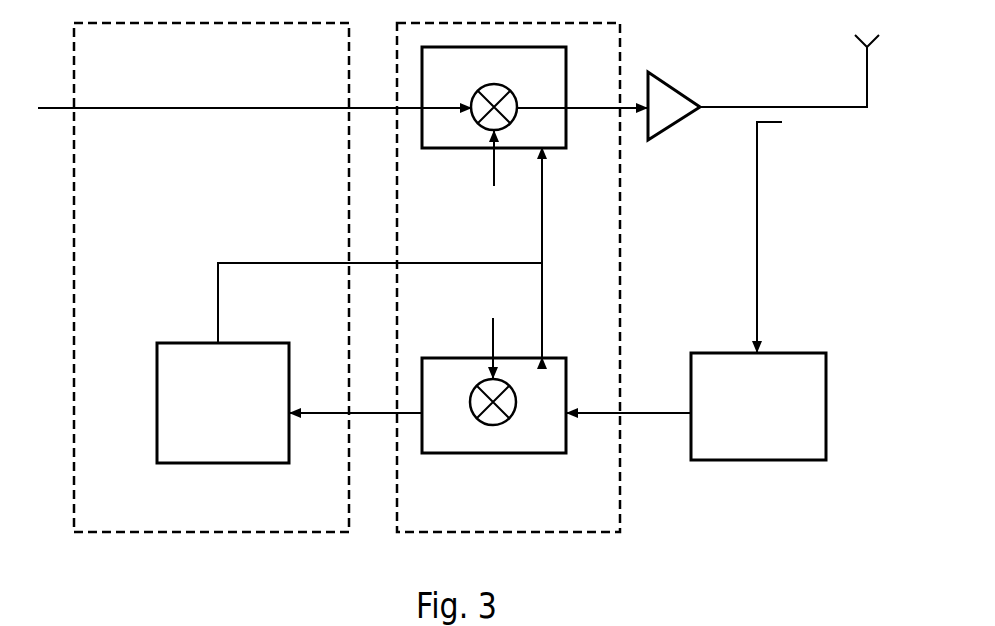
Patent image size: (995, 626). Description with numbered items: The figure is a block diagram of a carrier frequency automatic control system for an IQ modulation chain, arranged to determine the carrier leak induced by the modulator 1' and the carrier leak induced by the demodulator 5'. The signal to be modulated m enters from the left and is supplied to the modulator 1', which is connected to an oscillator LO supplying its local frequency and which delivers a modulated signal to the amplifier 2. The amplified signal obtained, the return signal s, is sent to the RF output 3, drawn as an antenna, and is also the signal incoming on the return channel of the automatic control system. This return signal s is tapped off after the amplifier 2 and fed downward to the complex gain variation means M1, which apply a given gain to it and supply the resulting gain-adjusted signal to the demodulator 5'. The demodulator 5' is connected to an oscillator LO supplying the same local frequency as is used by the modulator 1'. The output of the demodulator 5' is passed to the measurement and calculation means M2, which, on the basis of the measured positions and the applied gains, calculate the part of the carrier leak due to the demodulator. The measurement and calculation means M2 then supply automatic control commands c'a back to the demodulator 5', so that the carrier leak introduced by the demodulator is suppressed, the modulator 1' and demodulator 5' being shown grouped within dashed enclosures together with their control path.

The modulator 1' is at (494, 97).
The amplifier 2 is at (674, 106).
The RF output 3 is at (789, 53).
The demodulator 5' is at (494, 405).
The complex gain variation means M1 is at (758, 406).
The measurement and calculation means M2 is at (223, 403).
The oscillator LO is at (512, 254).
The signal to be modulated m is at (245, 86).
The return signal s is at (769, 237).
The automatic control commands c'a is at (380, 253).